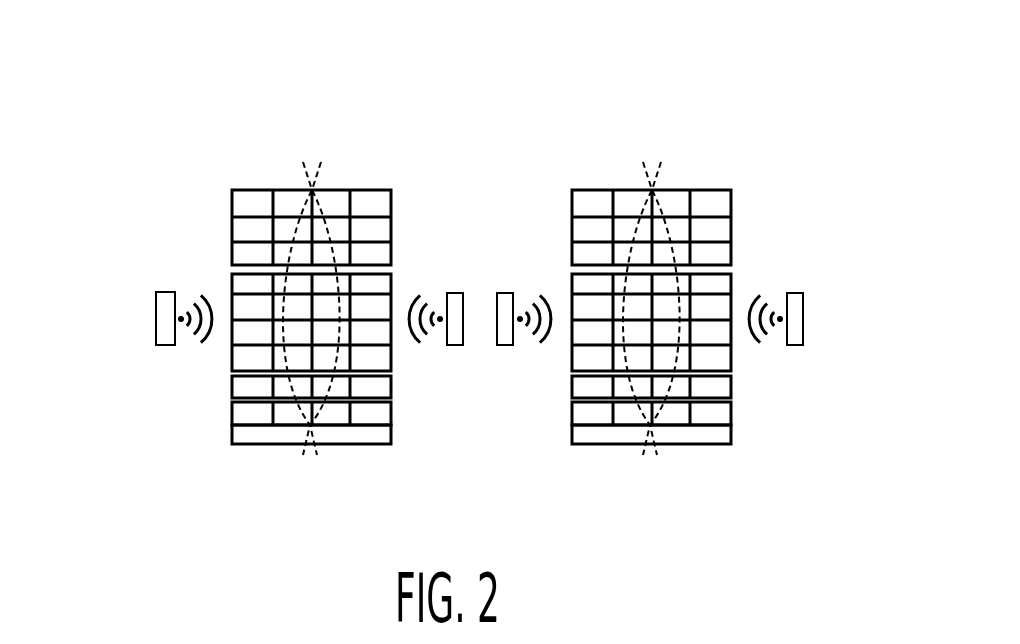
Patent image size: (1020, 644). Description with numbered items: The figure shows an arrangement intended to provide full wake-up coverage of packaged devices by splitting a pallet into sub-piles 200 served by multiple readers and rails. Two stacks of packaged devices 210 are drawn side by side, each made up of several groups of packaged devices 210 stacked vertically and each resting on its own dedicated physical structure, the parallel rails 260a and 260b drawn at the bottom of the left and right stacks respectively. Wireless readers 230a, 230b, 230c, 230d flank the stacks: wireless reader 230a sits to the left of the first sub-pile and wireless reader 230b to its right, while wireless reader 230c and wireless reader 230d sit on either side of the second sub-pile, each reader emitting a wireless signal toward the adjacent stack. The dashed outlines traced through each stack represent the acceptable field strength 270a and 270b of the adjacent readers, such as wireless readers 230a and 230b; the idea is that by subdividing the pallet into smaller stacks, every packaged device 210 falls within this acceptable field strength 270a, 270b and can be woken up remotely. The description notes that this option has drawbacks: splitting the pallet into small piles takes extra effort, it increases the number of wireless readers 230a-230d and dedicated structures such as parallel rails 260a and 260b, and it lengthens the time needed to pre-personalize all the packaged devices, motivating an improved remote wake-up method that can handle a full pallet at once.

The sub-piles 200 is at (724, 136).
The packaged device 210 is at (240, 208).
The wireless reader 230a is at (160, 315).
The wireless reader 230b is at (455, 293).
The wireless reader 230c is at (502, 293).
The wireless reader 230d is at (803, 312).
The rail 260a is at (237, 433).
The rail 260b is at (728, 435).
The acceptable field strength 270a is at (303, 169).
The acceptable field strength 270b is at (320, 168).